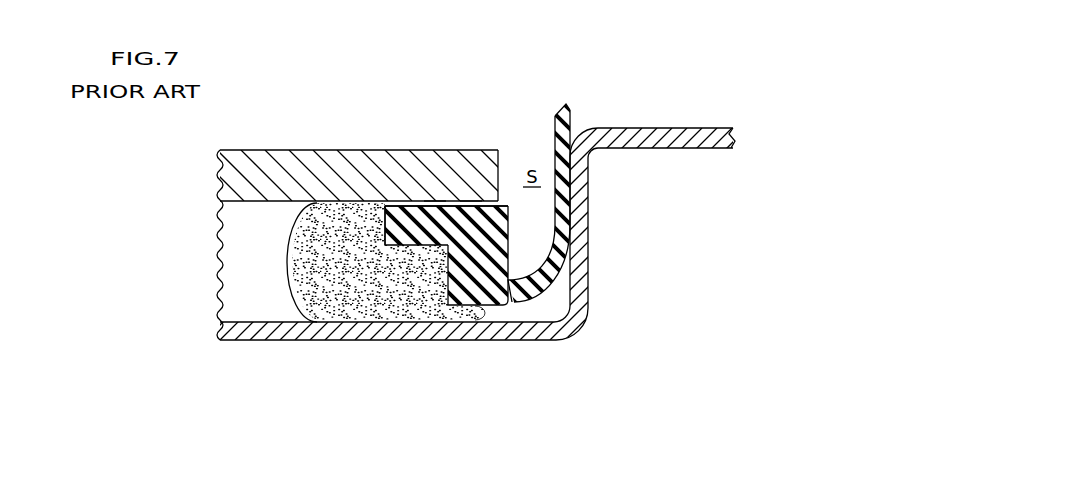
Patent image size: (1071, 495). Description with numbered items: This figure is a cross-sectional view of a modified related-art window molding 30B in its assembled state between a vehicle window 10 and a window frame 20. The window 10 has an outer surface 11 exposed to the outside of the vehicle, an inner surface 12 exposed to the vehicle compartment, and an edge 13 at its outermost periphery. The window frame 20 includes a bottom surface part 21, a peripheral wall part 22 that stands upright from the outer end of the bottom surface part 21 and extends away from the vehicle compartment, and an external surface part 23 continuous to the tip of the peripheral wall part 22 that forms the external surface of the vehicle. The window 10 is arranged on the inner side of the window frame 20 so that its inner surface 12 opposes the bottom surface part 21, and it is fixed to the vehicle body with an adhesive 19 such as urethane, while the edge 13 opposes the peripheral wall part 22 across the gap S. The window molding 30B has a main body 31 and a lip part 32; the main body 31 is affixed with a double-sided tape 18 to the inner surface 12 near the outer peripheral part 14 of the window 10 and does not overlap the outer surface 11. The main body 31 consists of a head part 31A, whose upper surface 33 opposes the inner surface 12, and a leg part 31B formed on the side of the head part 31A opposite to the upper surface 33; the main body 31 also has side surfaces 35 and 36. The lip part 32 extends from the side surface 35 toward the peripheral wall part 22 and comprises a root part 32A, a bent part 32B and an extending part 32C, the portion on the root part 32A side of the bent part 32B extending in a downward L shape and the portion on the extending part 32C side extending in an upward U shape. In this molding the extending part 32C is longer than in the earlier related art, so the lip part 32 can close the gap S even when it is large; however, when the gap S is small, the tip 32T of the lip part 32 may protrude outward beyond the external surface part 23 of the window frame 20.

The window 10 is at (335, 218).
The outer surface 11 is at (245, 149).
The inner surface 12 is at (243, 206).
The edge 13 is at (498, 178).
The outer peripheral part 14 is at (470, 200).
The double-sided tape 18 is at (435, 200).
The adhesive 19 is at (333, 258).
The window frame 20 is at (566, 230).
The bottom surface part 21 is at (272, 341).
The peripheral wall part 22 is at (586, 243).
The external surface part 23 is at (645, 134).
The window molding 30B is at (474, 254).
The main body 31 is at (407, 258).
The head part 31A is at (436, 232).
The leg part 31B is at (478, 272).
The lip part 32 is at (540, 240).
The root part 32A is at (507, 287).
The bent part 32B is at (520, 289).
The extending part 32C is at (562, 268).
The tip 32T is at (567, 106).
The upper surface 33 is at (408, 207).
The side surface 35 is at (510, 233).
The side surface 36 is at (384, 230).